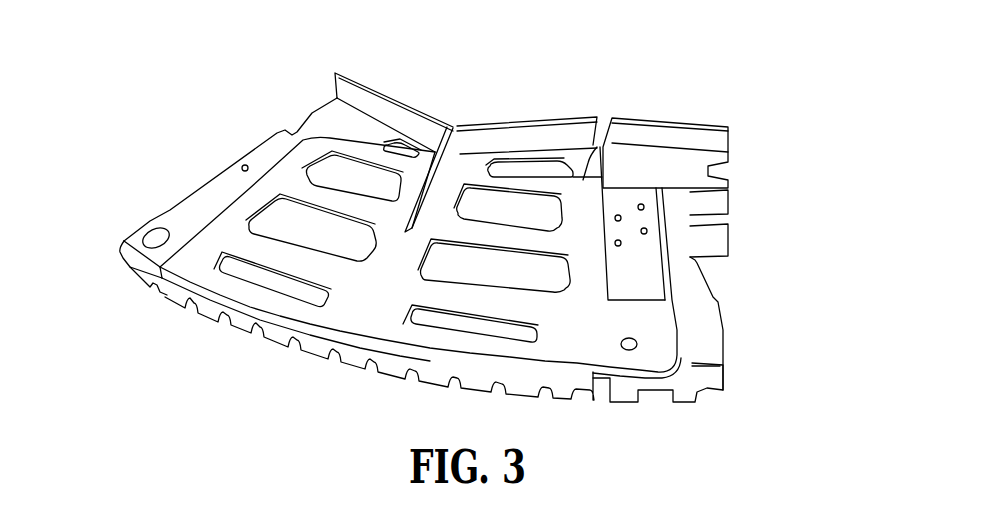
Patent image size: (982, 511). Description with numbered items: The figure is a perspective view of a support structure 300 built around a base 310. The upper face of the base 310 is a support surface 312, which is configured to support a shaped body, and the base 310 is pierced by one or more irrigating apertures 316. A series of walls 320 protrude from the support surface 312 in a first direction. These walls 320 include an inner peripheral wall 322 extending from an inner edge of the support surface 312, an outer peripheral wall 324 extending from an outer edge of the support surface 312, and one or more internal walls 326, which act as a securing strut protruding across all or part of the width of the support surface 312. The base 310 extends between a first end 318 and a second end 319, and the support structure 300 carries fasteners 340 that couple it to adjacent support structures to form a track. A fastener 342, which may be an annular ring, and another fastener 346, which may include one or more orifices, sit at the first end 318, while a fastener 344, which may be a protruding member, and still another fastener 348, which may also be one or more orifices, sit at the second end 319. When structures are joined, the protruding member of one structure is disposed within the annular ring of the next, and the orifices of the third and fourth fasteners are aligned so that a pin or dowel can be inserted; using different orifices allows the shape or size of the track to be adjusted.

The support structure 300 is at (258, 46).
The base 310 is at (248, 250).
The support surface 312 is at (590, 168).
The irrigating aperture 316 is at (282, 230).
The first end 318 is at (188, 193).
The second end 319 is at (653, 275).
The walls 320 is at (403, 100).
The inner peripheral wall 322 is at (350, 72).
The outer peripheral wall 324 is at (578, 367).
The internal wall 326 is at (430, 188).
The fasteners 340 is at (432, 262).
The fastener 342 is at (141, 238).
The fastener 344 is at (635, 350).
The fastener 346 is at (245, 164).
The fastener 348 is at (621, 218).